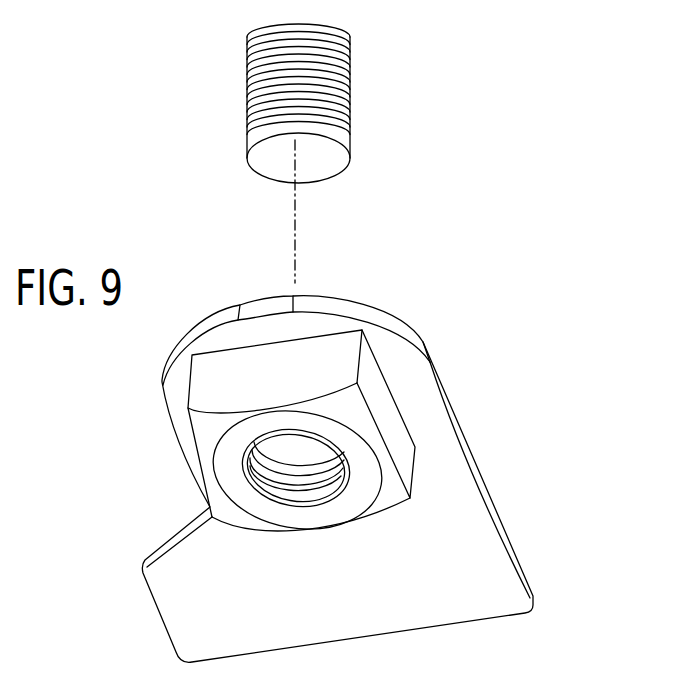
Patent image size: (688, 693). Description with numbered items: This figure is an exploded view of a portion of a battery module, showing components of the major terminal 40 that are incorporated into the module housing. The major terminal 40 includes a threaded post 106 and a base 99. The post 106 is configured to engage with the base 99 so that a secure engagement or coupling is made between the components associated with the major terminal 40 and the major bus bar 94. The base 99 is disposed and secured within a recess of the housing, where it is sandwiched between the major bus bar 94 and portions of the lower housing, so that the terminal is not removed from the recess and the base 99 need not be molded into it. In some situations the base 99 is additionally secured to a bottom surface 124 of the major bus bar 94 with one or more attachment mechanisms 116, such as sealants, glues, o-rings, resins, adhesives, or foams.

The major terminal 40 is at (217, 105).
The post 106 is at (345, 100).
The major bus bar 94 is at (455, 410).
The attachment mechanism 116 is at (393, 363).
The base 99 is at (393, 450).
The bottom surface 124 is at (472, 555).